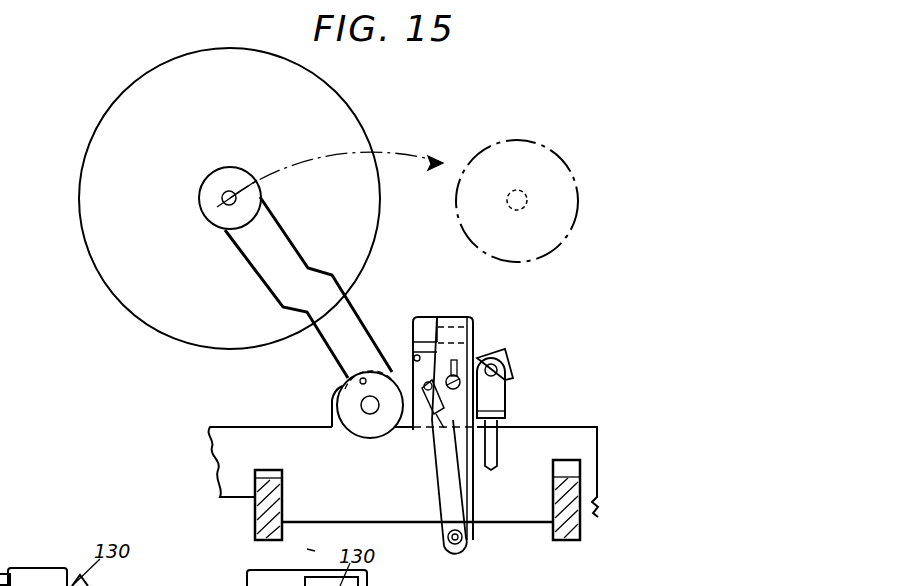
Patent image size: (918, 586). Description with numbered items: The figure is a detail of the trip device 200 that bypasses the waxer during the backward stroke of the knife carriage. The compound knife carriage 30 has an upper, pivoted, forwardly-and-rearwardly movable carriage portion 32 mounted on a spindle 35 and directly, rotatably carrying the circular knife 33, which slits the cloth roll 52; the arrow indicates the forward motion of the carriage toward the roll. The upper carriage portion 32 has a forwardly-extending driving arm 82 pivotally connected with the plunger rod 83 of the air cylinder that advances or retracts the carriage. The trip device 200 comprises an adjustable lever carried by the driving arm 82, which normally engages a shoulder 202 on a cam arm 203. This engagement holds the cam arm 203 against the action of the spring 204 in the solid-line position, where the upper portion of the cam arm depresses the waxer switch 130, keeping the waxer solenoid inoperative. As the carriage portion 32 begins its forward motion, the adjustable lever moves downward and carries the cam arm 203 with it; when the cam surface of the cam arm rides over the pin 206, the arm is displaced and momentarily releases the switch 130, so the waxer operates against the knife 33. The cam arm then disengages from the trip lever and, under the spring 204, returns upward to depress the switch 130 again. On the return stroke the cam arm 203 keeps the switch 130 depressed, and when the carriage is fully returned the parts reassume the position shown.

The compound knife carriage 30 is at (303, 426).
The upper carriage portion 32 is at (335, 342).
The circular knife 33 is at (90, 202).
The spindle 35 is at (370, 405).
The cloth roll 52 is at (558, 236).
The driving arm 82 is at (513, 377).
The plunger rod 83 is at (493, 448).
The waxer switch 130 is at (450, 336).
The trip device 200 is at (472, 352).
The shoulder 202 is at (433, 424).
The cam arm 203 is at (457, 488).
The spring 204 is at (430, 418).
The pin 206 is at (461, 543).